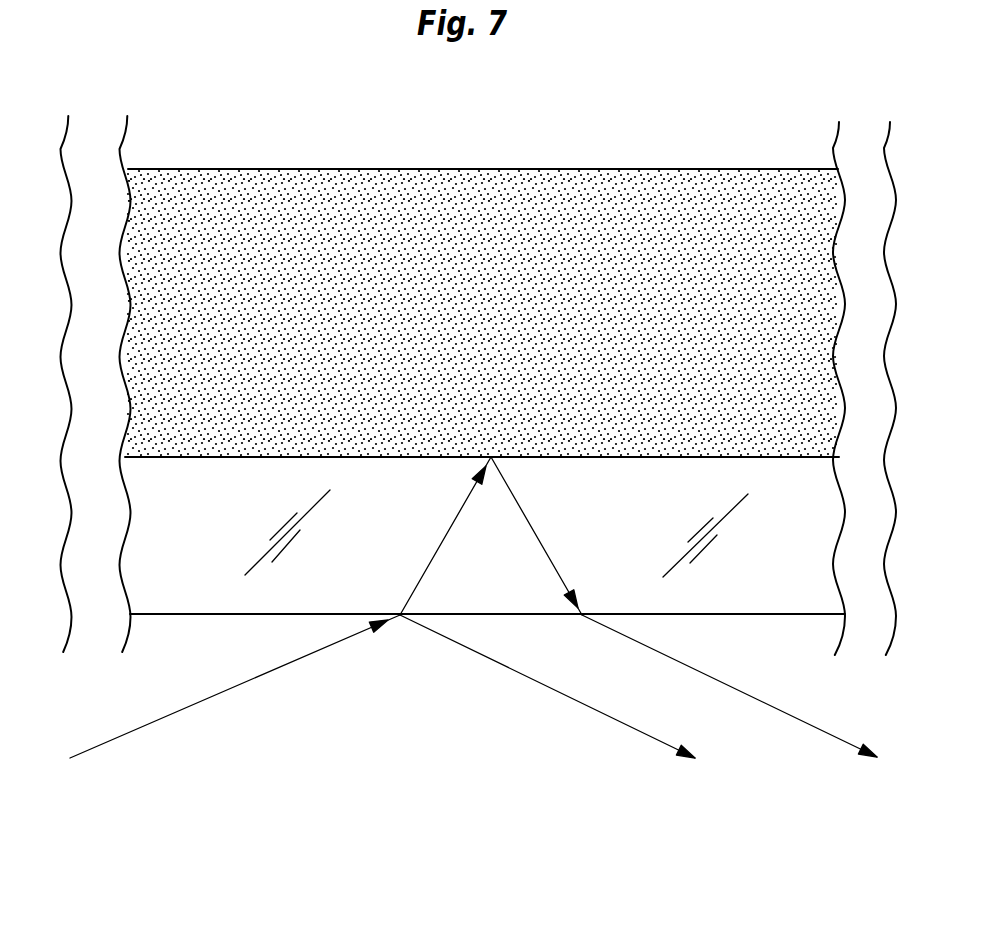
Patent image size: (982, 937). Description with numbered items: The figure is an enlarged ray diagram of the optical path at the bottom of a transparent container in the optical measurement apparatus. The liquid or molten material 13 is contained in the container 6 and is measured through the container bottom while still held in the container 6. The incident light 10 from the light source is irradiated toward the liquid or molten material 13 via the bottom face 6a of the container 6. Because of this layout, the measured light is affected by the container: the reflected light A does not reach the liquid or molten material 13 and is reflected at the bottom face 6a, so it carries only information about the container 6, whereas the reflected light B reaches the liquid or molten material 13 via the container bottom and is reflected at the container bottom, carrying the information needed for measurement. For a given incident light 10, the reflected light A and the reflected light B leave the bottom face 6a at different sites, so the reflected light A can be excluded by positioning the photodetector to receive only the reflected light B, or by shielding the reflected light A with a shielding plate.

The liquid or molten material 13 is at (242, 193).
The container 6 is at (180, 533).
The bottom face of the container 6a is at (203, 600).
The incident light 10 is at (148, 723).
The reflected light A is at (618, 723).
The reflected light B is at (810, 725).